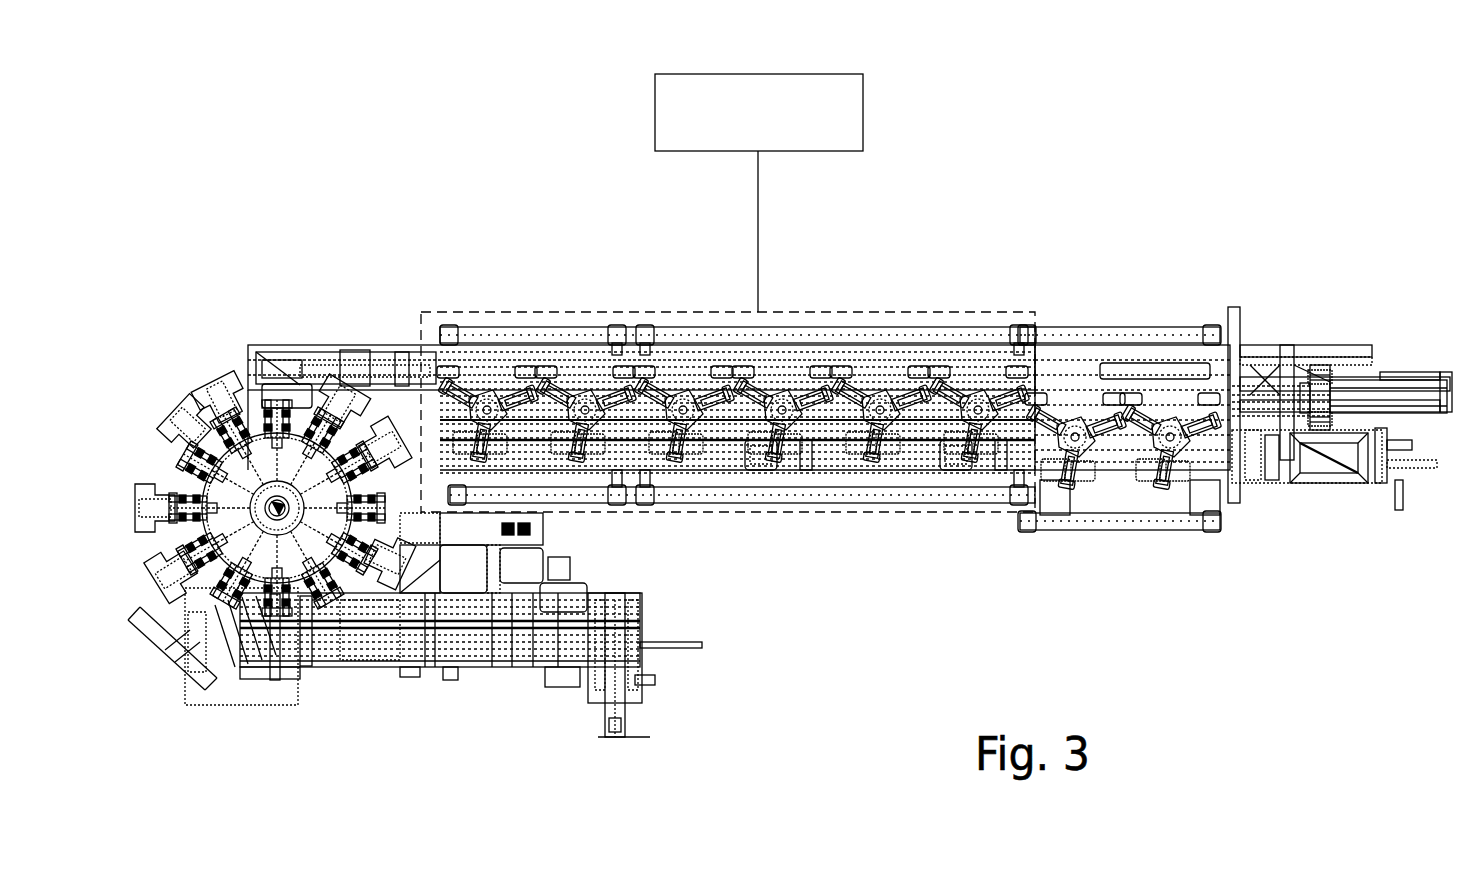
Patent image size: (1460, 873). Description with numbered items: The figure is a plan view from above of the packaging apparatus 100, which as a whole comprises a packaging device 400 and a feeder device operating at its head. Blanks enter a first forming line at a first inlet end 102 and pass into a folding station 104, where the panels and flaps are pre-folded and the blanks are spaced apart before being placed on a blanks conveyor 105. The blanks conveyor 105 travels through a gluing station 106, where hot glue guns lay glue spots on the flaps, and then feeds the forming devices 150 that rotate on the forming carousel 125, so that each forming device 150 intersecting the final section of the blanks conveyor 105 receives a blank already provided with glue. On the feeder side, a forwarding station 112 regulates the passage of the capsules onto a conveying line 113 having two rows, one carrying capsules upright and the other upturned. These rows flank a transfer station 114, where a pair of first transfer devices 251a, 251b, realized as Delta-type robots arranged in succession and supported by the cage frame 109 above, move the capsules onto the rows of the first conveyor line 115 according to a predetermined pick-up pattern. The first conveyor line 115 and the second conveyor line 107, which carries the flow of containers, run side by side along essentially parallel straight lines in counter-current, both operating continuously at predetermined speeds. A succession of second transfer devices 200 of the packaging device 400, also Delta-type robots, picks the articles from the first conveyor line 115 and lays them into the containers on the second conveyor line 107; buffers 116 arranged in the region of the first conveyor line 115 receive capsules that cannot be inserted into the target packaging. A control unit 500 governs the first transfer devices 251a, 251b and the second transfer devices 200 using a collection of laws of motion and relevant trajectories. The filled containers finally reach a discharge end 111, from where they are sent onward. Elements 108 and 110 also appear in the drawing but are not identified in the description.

The packaging apparatus 100 is at (988, 183).
The first inlet end 102 is at (528, 683).
The folding station 104 is at (475, 660).
The blanks conveyor 105 is at (308, 638).
The gluing station 106 is at (210, 652).
The second conveyor line 107 is at (408, 363).
The frame section 108 is at (378, 360).
The cage frame 109 is at (645, 327).
The conveyor section 110 is at (1117, 368).
The discharge end 111 is at (1356, 400).
The forwarding station 112 is at (1325, 490).
The conveying line 113 is at (1200, 478).
The transfer station 114 is at (1127, 348).
The first conveyor line 115 is at (812, 462).
The buffers 116 is at (760, 470).
The rotating forming carousel 125 is at (262, 452).
The forming devices 150 is at (328, 392).
The second transfer devices 200 is at (487, 400).
The first transfer device 251a is at (1162, 445).
The first transfer device 251b is at (1070, 450).
The packaging device 400 is at (988, 312).
The control unit 500 is at (866, 113).